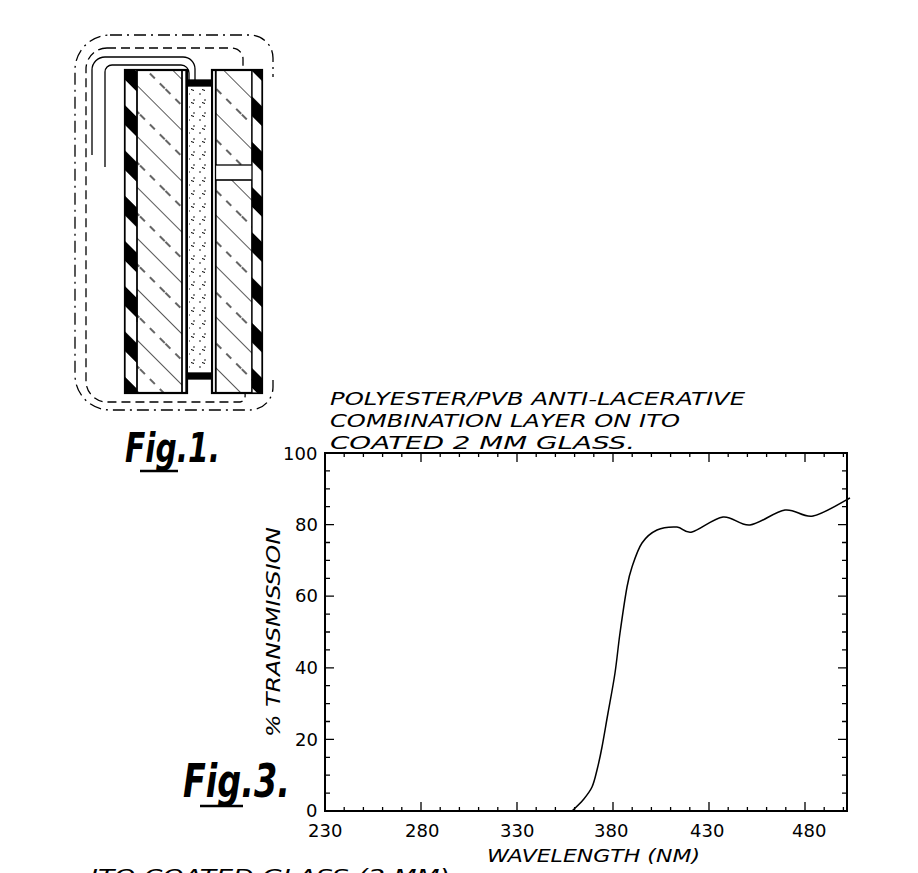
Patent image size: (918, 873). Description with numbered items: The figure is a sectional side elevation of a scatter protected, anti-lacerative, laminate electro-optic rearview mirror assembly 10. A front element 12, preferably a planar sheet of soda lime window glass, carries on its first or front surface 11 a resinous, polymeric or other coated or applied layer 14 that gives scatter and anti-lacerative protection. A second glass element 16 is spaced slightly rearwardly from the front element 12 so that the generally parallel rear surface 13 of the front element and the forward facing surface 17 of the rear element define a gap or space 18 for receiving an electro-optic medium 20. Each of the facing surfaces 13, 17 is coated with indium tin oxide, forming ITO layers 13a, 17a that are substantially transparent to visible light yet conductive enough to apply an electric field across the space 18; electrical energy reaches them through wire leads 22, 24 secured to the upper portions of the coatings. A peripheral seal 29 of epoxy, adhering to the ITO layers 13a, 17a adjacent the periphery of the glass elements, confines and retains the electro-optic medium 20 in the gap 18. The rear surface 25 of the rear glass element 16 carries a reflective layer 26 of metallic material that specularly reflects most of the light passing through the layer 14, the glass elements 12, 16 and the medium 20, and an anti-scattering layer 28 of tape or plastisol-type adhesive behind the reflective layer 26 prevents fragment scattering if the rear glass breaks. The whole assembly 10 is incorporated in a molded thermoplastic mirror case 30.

The electro-optic rearview mirror assembly 10 is at (294, 79).
The front surface 11 is at (257, 243).
The front element 12 is at (242, 220).
The rear surface 13 is at (218, 165).
The ITO layer 13a is at (215, 180).
The coated or applied layer 14 is at (262, 133).
The second glass element 16 is at (157, 255).
The forward facing surface 17 is at (185, 204).
The ITO layer 17a is at (185, 178).
The gap or space 18 is at (200, 275).
The electro-optic medium 20 is at (200, 310).
The wire lead 22 is at (92, 107).
The wire lead 24 is at (107, 137).
The rear surface 25 is at (143, 308).
The reflective layer 26 is at (140, 328).
The anti-scattering layer 28 is at (127, 363).
The peripheral seal 29 is at (190, 80).
The mirror case 30 is at (268, 32).